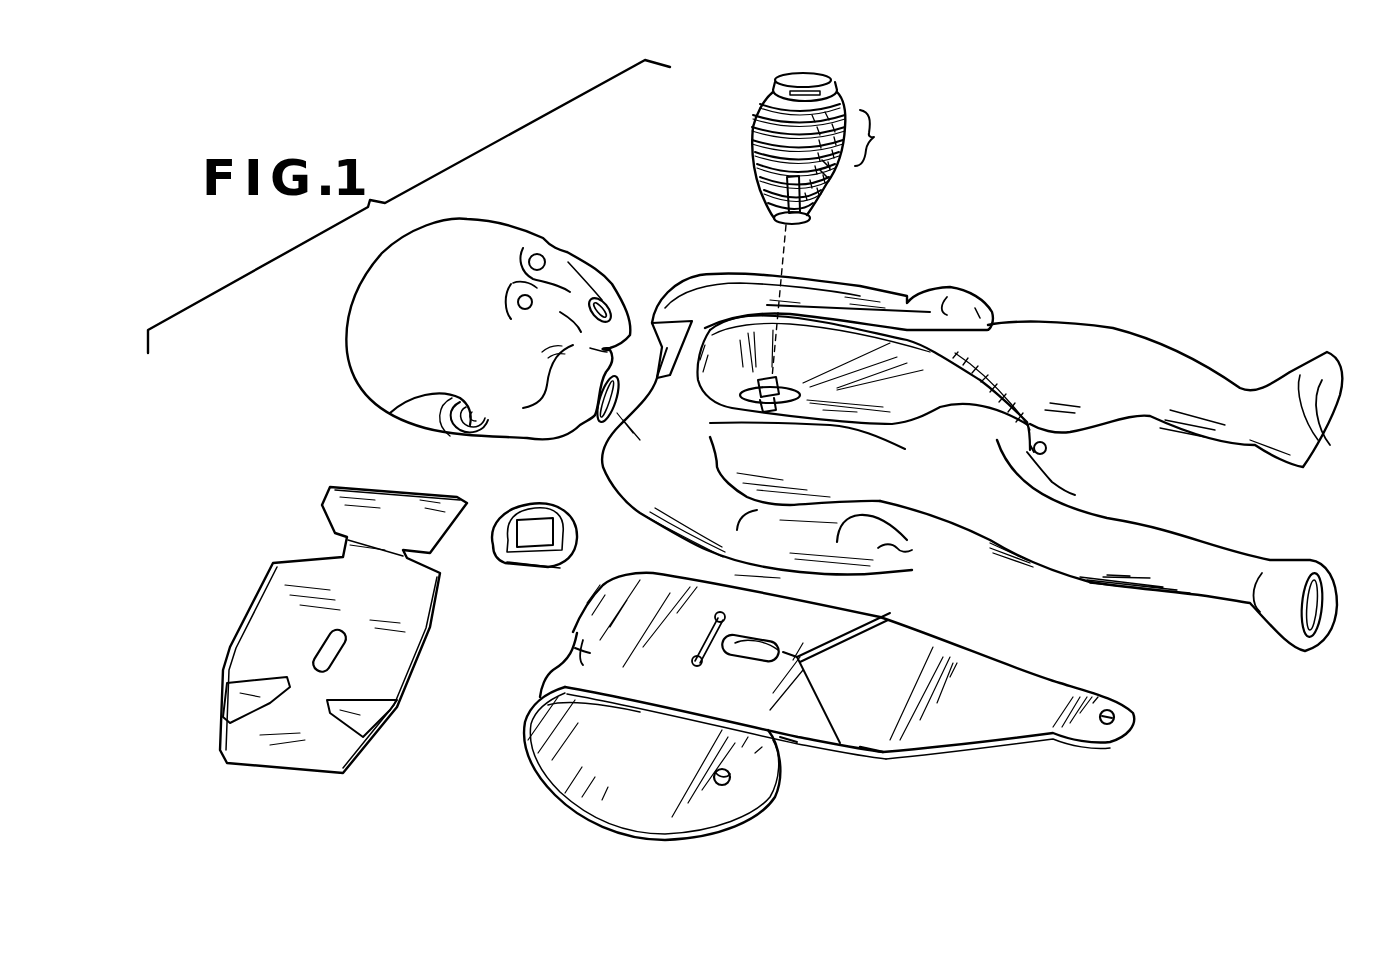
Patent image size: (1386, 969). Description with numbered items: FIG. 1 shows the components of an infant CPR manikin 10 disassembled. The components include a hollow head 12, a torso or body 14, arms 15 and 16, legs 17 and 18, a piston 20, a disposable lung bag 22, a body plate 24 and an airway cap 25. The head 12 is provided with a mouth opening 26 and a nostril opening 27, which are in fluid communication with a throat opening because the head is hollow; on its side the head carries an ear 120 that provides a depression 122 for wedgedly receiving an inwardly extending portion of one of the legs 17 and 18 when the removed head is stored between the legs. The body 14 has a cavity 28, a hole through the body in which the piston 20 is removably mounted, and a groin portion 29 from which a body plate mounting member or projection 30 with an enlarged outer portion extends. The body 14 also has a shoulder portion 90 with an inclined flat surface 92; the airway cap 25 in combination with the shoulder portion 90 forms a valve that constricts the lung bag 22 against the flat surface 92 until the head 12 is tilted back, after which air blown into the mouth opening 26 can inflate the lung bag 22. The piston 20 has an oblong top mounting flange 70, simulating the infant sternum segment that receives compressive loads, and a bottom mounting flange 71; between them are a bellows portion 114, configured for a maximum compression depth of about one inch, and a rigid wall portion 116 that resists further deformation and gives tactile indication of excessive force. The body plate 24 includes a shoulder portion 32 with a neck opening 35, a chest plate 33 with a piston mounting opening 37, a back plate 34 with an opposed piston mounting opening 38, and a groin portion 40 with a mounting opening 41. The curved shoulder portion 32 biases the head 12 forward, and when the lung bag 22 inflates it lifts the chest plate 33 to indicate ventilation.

The infant CPR manikin 10 is at (1075, 207).
The head 12 is at (464, 212).
The torso or body 14 is at (900, 472).
The arm 15 is at (897, 292).
The arm 16 is at (806, 570).
The leg 17 is at (1172, 335).
The leg 18 is at (1187, 605).
The piston 20 is at (745, 127).
The disposable lung bag 22 is at (230, 622).
The body plate 24 is at (615, 707).
The airway cap 25 is at (523, 578).
The mouth opening 26 is at (600, 302).
The nostril opening 27 is at (565, 300).
The cavity 28 is at (806, 385).
The groin portion 29 is at (1052, 482).
The body plate mounting member or projection 30 is at (1048, 450).
The shoulder portion 32 is at (543, 685).
The chest plate 33 is at (800, 733).
The back plate 34 is at (592, 823).
The neck opening 35 is at (578, 652).
The piston mounting opening 37 is at (877, 620).
The piston mounting opening 38 is at (720, 785).
The groin portion 40 is at (1057, 738).
The mounting opening 41 is at (1115, 717).
The top mounting flange 70 is at (805, 80).
The bottom mounting flange 71 is at (782, 222).
The shoulder portion 90 is at (652, 323).
The inclined flat surface 92 is at (660, 345).
The bellows portion 114 is at (873, 135).
The rigid wall portion 116 is at (837, 177).
The ear 120 is at (463, 433).
The depression 122 is at (392, 413).